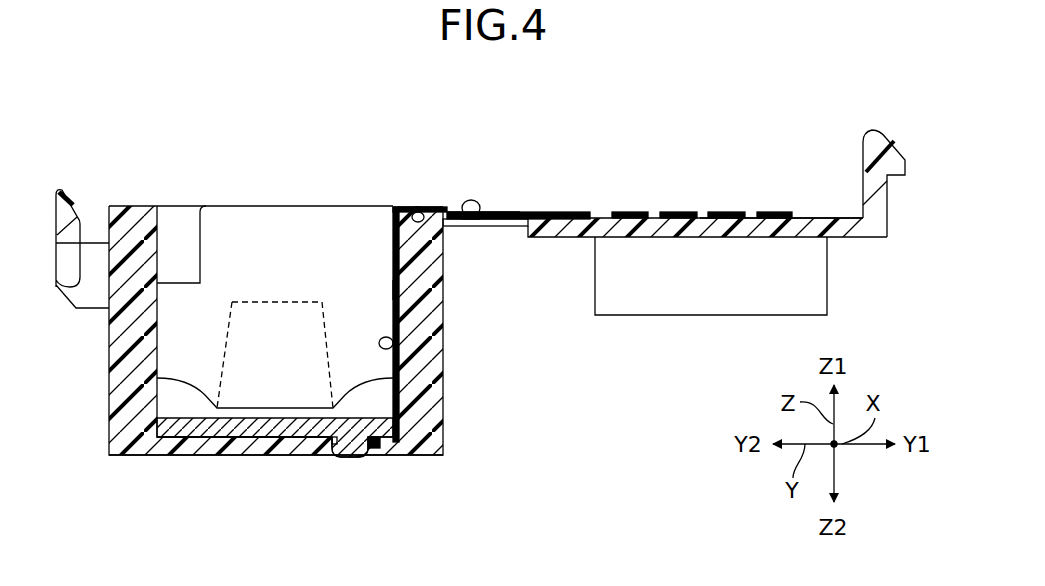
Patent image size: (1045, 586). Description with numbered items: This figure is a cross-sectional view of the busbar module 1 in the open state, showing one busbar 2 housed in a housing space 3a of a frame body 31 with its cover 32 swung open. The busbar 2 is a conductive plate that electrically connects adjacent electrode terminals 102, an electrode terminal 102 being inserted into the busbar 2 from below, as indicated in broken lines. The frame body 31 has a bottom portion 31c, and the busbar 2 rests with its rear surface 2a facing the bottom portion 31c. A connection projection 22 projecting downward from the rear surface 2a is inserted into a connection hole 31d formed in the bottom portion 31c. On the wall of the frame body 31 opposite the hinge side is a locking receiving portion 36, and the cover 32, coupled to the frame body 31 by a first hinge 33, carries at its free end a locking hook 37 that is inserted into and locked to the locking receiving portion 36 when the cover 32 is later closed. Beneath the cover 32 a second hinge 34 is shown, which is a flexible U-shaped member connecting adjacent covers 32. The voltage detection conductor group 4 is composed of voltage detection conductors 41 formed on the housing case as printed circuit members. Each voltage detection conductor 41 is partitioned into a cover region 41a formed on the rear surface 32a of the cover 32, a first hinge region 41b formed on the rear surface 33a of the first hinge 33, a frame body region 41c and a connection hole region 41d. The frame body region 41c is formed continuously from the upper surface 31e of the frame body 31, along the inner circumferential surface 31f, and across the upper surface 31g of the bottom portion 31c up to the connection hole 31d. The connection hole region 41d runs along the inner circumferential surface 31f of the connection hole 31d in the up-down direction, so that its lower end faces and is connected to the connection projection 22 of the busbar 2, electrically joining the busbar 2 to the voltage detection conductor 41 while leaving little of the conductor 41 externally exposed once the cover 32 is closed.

The busbar module 1 is at (168, 166).
The busbar 2 is at (176, 408).
The rear surface 2a is at (232, 438).
The housing space 3a is at (232, 224).
The voltage detection conductor group 4 is at (598, 186).
The connection projection 22 is at (358, 453).
The frame body 31 is at (446, 368).
The bottom portion 31c is at (188, 448).
The connection hole 31d is at (308, 456).
The upper surface 31e is at (418, 211).
The inner circumferential surface 31f is at (400, 348).
The upper surface of the bottom portion 31g is at (401, 431).
The cover 32 is at (848, 238).
The rear surface 32a is at (819, 212).
The first hinge 33 is at (497, 232).
The rear surface 33a is at (469, 217).
The second hinge 34 is at (717, 302).
The locking receiving portion 36 is at (77, 206).
The locking hook 37 is at (883, 150).
The voltage detection conductor 41 is at (513, 204).
The cover region 41a is at (550, 210).
The first hinge region 41b is at (490, 209).
The frame body region 41c is at (393, 300).
The connection hole region 41d is at (372, 456).
The electrode terminal 102 is at (283, 300).